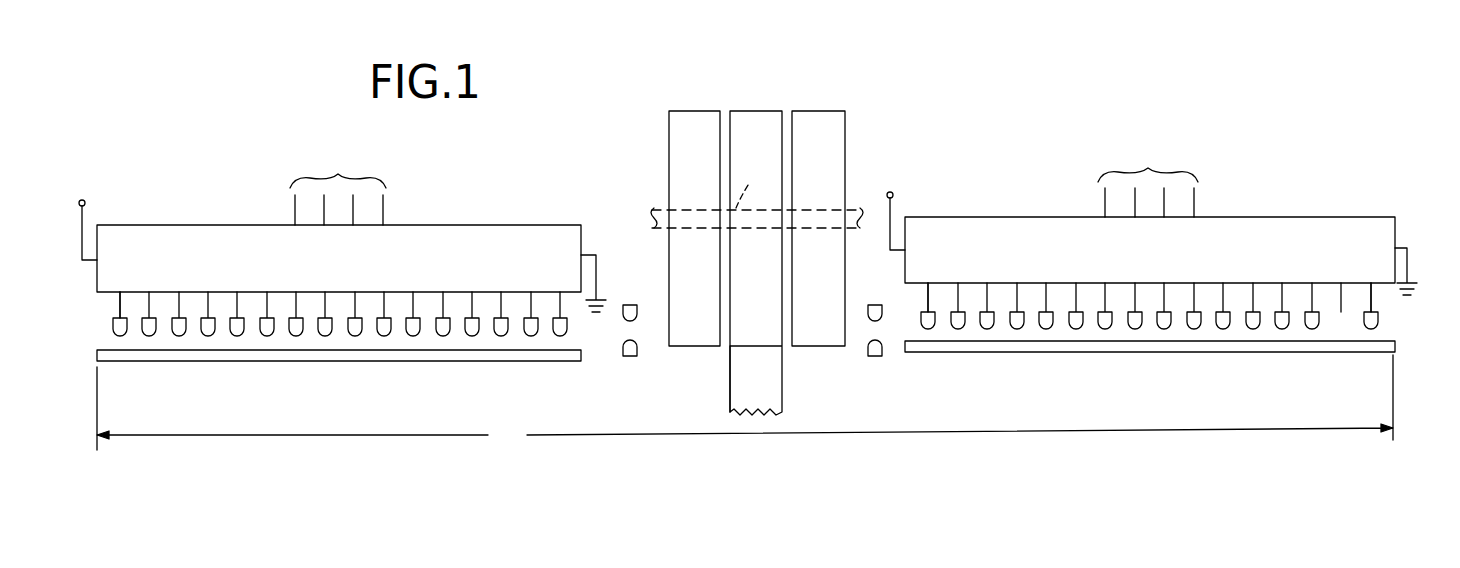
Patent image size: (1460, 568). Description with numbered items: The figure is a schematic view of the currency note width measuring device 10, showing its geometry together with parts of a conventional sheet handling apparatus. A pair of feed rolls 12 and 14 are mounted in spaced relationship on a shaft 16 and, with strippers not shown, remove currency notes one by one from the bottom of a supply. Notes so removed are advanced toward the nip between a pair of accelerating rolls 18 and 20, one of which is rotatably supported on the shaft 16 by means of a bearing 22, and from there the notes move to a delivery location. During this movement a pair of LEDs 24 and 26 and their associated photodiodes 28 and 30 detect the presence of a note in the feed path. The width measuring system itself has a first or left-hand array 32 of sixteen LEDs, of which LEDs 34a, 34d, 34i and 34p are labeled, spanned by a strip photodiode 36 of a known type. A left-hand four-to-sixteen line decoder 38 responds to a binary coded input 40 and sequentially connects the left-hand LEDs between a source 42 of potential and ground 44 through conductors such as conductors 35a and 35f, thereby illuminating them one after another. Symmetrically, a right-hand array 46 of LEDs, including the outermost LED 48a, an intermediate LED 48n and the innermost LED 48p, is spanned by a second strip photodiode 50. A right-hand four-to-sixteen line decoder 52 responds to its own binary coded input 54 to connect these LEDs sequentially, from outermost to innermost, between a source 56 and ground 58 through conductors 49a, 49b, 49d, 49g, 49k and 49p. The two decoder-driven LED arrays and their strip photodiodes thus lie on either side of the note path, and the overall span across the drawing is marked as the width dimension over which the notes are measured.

The position measuring apparatus 10 is at (583, 181).
The feed roll 12 is at (681, 118).
The feed roll 14 is at (805, 118).
The shaft 16 is at (646, 214).
The accelerating roll 18 is at (742, 118).
The accelerating roll 20 is at (783, 378).
The bearing 22 is at (752, 174).
The LED 24 is at (631, 305).
The LED 26 is at (876, 305).
The photodiode 28 is at (632, 356).
The photodiode 30 is at (876, 356).
The left-hand array 32 is at (322, 450).
The LED 34a is at (122, 337).
The LED 34d is at (210, 337).
The LED 34i is at (357, 337).
The LED 34p is at (562, 337).
The conductor 35a is at (122, 305).
The conductor 35f is at (268, 302).
The strip photodiode 36 is at (419, 361).
The left-hand four-to-sixteen line decoder 38 is at (478, 228).
The binary coded input 40 is at (338, 183).
The source of potential 42 is at (84, 199).
The ground 44 is at (597, 253).
The right-hand array 46 is at (1089, 450).
The LED 48a is at (1369, 330).
The LED 48n is at (989, 330).
The LED 48p is at (930, 330).
The conductor 49a is at (1374, 300).
The conductor 49b is at (1343, 296).
The conductor 49d is at (1284, 330).
The conductor 49g is at (1196, 330).
The conductor 49k is at (1107, 330).
The conductor 49p is at (930, 298).
The strip photodiode 50 is at (1230, 347).
The right-hand four-to-sixteen line decoder 52 is at (1268, 222).
The binary coded input 54 is at (1148, 172).
The source 56 is at (892, 191).
The ground 58 is at (1405, 246).